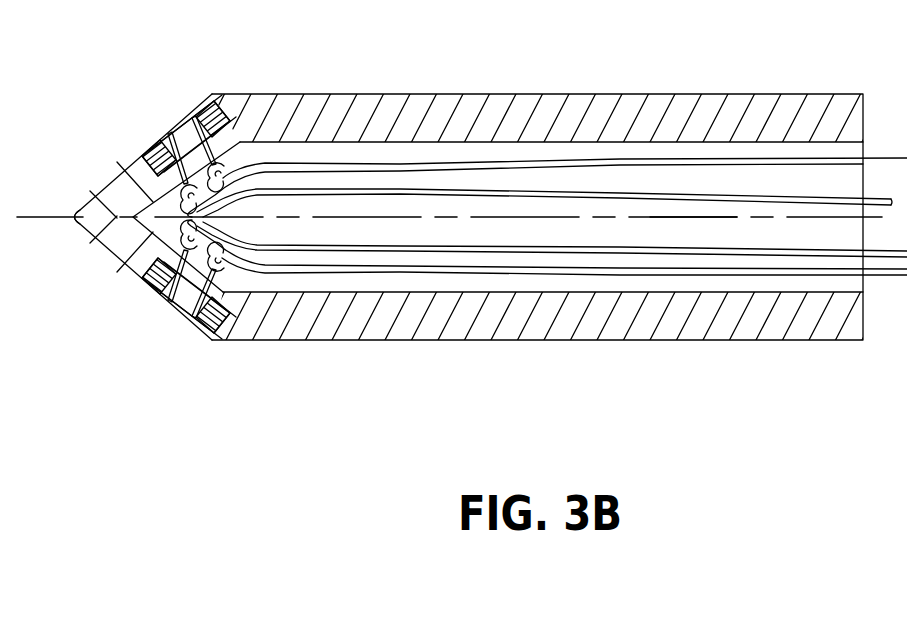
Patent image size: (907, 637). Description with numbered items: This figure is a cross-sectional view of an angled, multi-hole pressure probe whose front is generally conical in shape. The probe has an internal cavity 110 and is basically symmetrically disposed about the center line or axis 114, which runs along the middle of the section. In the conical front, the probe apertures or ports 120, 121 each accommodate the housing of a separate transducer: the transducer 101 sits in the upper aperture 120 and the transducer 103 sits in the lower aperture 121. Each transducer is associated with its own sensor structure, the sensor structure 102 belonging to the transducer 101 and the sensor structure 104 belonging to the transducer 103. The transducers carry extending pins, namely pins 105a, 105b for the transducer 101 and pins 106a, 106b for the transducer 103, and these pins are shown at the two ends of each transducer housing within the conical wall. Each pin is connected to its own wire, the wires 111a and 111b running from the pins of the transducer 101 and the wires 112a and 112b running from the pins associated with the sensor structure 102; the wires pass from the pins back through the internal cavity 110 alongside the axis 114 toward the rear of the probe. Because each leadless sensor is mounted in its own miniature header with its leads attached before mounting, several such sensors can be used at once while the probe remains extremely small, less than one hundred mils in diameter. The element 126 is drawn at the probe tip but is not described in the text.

The transducer 101 is at (205, 128).
The sensor structure 102 is at (178, 128).
The transducer 103 is at (207, 312).
The sensor structure 104 is at (177, 306).
The pin 105a is at (214, 95).
The pin 105b is at (170, 140).
The pin 106a is at (224, 294).
The pin 106b is at (168, 314).
The internal cavity 110 is at (613, 150).
The wire 111a is at (735, 152).
The wire 111b is at (500, 190).
The wire 112a is at (522, 275).
The wire 112b is at (410, 252).
The center line or axis 114 is at (697, 218).
The probe hole or aperture 120 is at (145, 165).
The probe hole or aperture 121 is at (143, 276).
The nose tip 126 is at (113, 257).